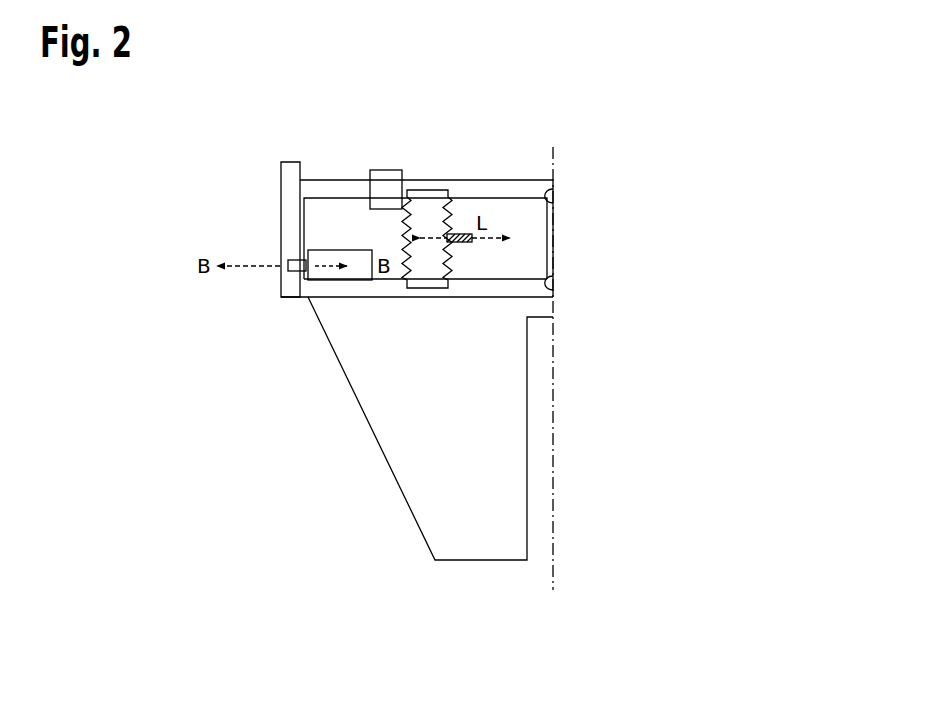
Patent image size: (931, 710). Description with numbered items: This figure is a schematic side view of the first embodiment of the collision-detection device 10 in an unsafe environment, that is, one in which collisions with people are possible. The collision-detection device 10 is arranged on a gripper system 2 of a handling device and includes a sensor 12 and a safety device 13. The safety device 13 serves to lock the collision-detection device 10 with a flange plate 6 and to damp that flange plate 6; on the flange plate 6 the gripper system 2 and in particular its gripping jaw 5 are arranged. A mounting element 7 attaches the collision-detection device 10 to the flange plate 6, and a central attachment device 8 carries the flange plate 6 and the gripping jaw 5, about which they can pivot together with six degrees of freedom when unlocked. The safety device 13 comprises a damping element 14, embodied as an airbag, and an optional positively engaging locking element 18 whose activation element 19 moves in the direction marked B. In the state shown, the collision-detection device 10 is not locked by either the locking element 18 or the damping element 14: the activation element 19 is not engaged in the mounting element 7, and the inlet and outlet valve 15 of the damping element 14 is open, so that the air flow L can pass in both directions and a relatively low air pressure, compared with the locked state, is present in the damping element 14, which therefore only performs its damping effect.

The gripper system 2 is at (290, 380).
The gripping jaw 5 is at (393, 438).
The flange plate 6 is at (334, 289).
The mounting element 7 is at (294, 168).
The central attachment device 8 is at (555, 193).
The collision-detection device 10 is at (245, 245).
The sensor 12 is at (388, 170).
The safety device 13 is at (466, 168).
The damping element 14 is at (449, 216).
The inlet and outlet valve 15 is at (451, 240).
The positively engaging locking element 18 is at (350, 261).
The activation element 19 is at (305, 258).